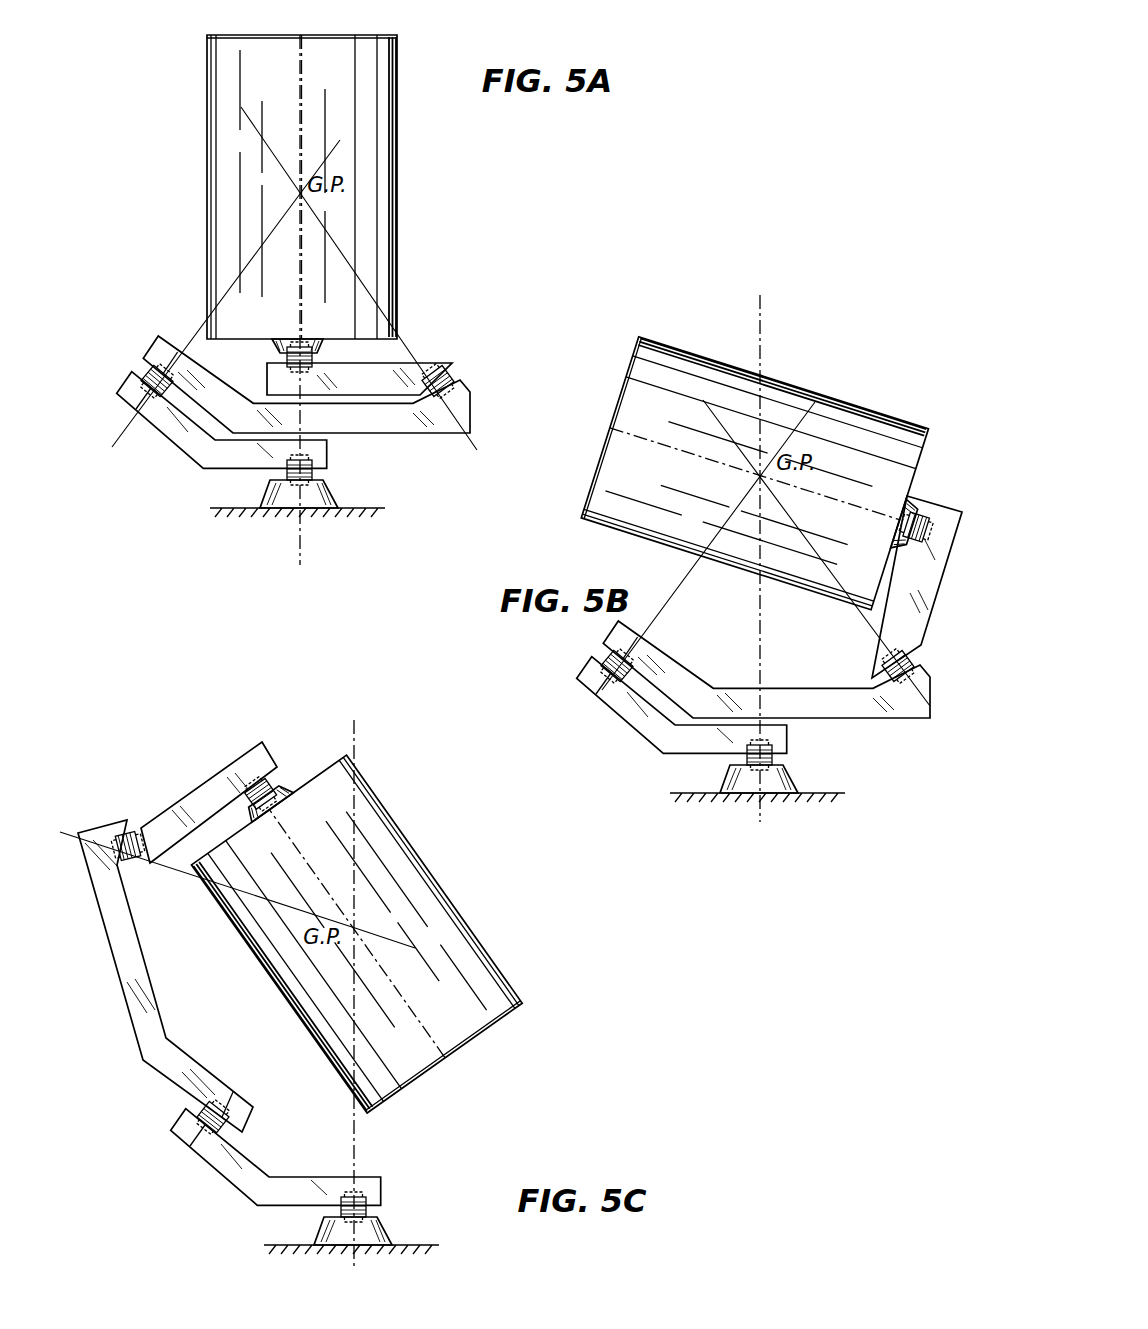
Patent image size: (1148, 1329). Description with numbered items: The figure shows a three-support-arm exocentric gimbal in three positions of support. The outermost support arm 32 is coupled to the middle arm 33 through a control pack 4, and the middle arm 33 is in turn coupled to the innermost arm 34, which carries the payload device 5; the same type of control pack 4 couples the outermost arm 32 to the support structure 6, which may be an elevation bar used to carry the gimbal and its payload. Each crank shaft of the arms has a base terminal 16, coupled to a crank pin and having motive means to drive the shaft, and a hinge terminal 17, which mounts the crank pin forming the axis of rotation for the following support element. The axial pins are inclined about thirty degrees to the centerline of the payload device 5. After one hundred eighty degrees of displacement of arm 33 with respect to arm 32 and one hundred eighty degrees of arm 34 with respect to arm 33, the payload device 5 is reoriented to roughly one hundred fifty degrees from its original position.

In FIG. 5A, the control pack 4 is at (136, 362).
In FIG. 5B, the control pack 4 is at (598, 650).
In FIG. 5C, the control pack 4 is at (283, 772).
In FIG. 5A, the payload device 5 is at (382, 214).
In FIG. 5B, the payload device 5 is at (790, 400).
In FIG. 5C, the payload device 5 is at (396, 841).
In FIG. 5A, the support structure 6 is at (272, 503).
In FIG. 5B, the support structure 6 is at (739, 792).
In FIG. 5C, the support structure 6 is at (370, 1237).
In FIG. 5A, the base terminal 16 is at (157, 352).
In FIG. 5B, the base terminal 16 is at (630, 625).
In FIG. 5C, the base terminal 16 is at (142, 867).
In FIG. 5A, the hinge terminal 17 is at (138, 398).
In FIG. 5B, the hinge terminal 17 is at (599, 700).
In FIG. 5C, the hinge terminal 17 is at (257, 757).
In FIG. 5A, the outermost support arm 32 is at (210, 453).
In FIG. 5B, the outermost support arm 32 is at (662, 733).
In FIG. 5C, the outermost support arm 32 is at (257, 1185).
In FIG. 5A, the middle support arm 33 is at (357, 425).
In FIG. 5B, the middle support arm 33 is at (855, 707).
In FIG. 5C, the middle support arm 33 is at (143, 982).
In FIG. 5A, the innermost support arm 34 is at (380, 388).
In FIG. 5B, the innermost support arm 34 is at (923, 593).
In FIG. 5C, the innermost support arm 34 is at (193, 793).